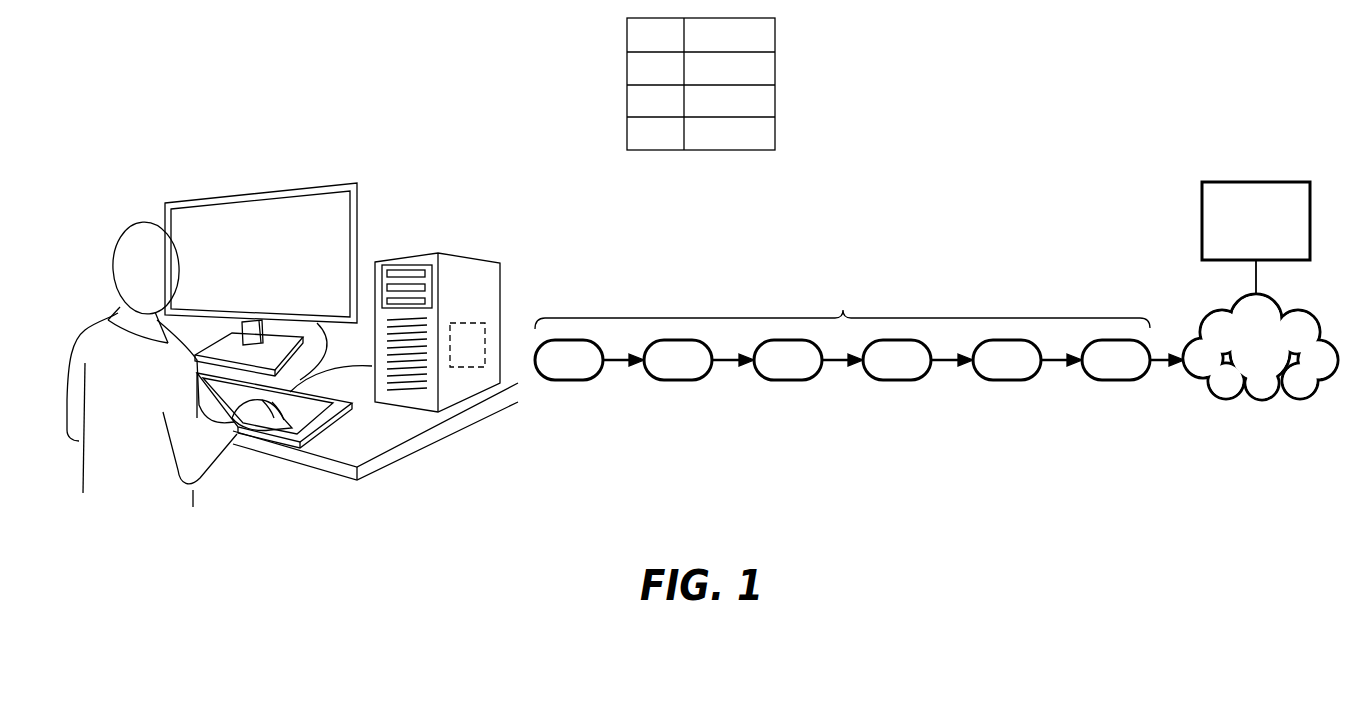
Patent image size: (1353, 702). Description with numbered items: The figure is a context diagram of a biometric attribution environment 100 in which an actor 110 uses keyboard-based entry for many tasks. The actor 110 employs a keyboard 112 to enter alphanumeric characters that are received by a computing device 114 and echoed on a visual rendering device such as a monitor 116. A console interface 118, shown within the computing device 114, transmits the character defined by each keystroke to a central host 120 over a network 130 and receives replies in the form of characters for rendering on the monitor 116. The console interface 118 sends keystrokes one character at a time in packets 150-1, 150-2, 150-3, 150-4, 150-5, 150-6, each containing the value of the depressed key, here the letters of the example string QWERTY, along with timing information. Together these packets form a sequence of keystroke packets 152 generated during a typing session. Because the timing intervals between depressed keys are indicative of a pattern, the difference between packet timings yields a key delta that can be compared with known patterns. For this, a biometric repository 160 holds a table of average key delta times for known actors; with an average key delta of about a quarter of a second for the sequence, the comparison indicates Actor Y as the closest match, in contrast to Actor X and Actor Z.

The biometric attribution environment 100 is at (350, 90).
The actor 110 is at (121, 240).
The keyboard 112 is at (293, 413).
The computing device 114 is at (402, 368).
The monitor 116 is at (358, 232).
The console interface 118 is at (463, 343).
The host 120 is at (1238, 233).
The network 130 is at (1242, 358).
The packet 150-1 is at (569, 380).
The packet 150-2 is at (678, 380).
The packet 150-3 is at (788, 380).
The packet 150-4 is at (897, 380).
The packet 150-5 is at (1007, 380).
The packet 150-6 is at (1116, 380).
The sequence of keystroke packets 152 is at (859, 326).
The biometric repository 160 is at (627, 68).